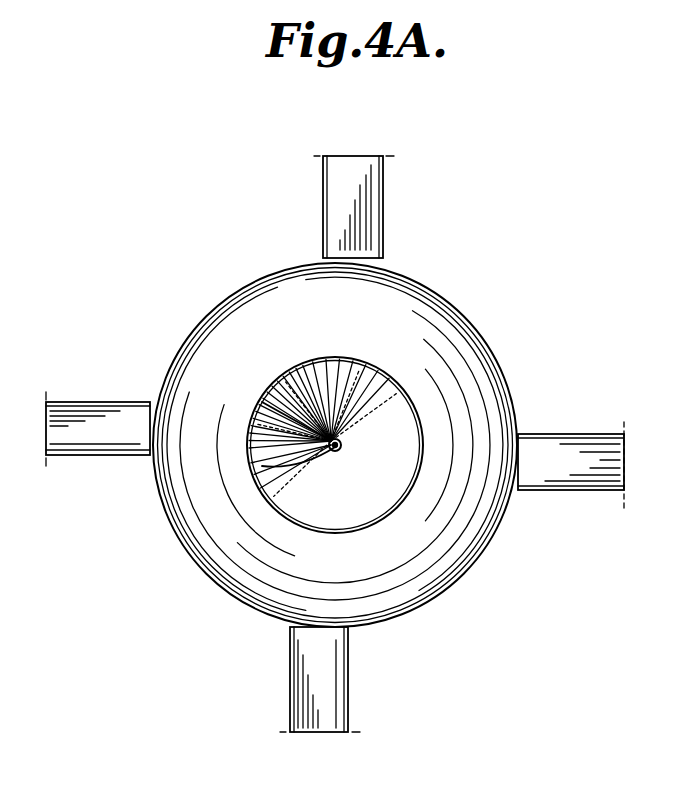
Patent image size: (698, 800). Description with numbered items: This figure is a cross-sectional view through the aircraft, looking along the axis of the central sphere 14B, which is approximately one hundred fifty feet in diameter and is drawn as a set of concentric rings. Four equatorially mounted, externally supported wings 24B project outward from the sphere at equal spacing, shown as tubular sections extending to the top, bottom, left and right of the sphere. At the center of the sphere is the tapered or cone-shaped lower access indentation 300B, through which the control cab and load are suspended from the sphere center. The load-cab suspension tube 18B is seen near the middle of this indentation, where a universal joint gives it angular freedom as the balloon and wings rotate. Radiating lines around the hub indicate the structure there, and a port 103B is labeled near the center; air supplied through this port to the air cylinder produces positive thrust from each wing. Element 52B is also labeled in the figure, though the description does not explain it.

The central sphere 14B is at (200, 317).
The wing 24B is at (346, 212).
The port 103B is at (322, 358).
The vane 52B is at (256, 411).
The load-cab suspension tube 18B is at (252, 462).
The lower access indentation 300B is at (398, 428).